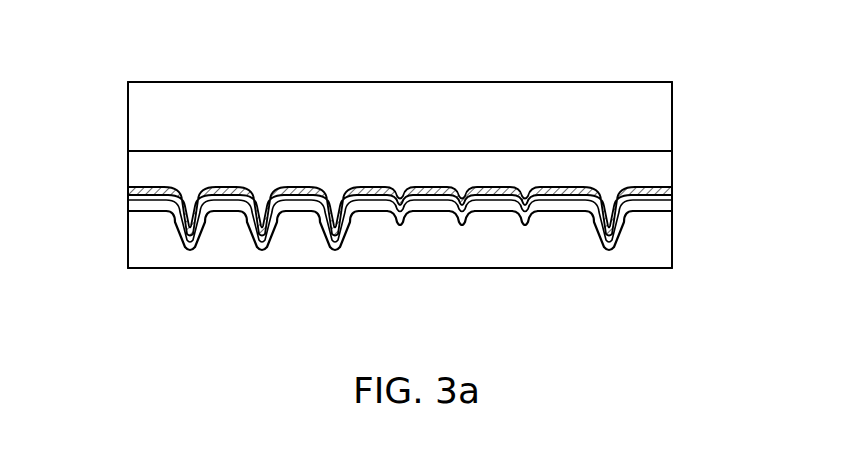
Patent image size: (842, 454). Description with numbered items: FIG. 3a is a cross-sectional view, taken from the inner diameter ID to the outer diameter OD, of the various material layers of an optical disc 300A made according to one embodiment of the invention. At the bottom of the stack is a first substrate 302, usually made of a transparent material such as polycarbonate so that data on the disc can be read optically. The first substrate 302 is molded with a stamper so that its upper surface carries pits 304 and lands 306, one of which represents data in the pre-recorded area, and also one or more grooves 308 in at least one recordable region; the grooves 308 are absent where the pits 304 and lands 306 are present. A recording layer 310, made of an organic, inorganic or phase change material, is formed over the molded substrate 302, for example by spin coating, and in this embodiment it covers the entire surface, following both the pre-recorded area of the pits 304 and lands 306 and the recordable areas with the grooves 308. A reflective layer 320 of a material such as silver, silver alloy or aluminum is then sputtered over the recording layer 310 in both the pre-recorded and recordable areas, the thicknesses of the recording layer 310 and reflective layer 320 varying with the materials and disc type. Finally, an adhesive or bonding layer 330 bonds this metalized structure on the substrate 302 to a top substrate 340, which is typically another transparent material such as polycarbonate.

The optical disc 300A is at (146, 44).
The first substrate 302 is at (672, 245).
The pits 304 is at (190, 252).
The lands 306 is at (227, 212).
The grooves 308 is at (400, 229).
The recording layer 310 is at (672, 209).
The reflective layer 320 is at (672, 192).
The adhesive or bonding layer 330 is at (672, 166).
The top substrate 340 is at (672, 96).
The inner diameter ID is at (128, 163).
The outer diameter OD is at (672, 125).